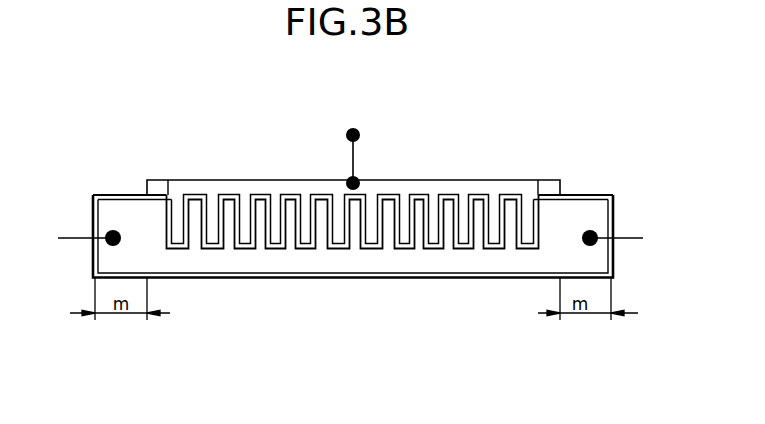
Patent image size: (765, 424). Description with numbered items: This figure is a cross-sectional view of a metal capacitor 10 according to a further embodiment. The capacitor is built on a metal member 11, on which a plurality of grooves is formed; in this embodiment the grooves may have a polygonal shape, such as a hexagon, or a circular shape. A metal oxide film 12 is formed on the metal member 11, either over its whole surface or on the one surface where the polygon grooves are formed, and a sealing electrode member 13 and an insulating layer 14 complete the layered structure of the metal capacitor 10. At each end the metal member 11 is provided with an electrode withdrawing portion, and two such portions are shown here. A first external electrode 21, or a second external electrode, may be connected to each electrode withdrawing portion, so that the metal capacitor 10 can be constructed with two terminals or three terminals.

The metal capacitor 10 is at (453, 167).
The metal member 11 is at (361, 266).
The metal oxide film 12 is at (295, 280).
The sealing electrode member 13 is at (275, 190).
The insulating layer 14 is at (155, 185).
The first external electrode 21 is at (360, 133).